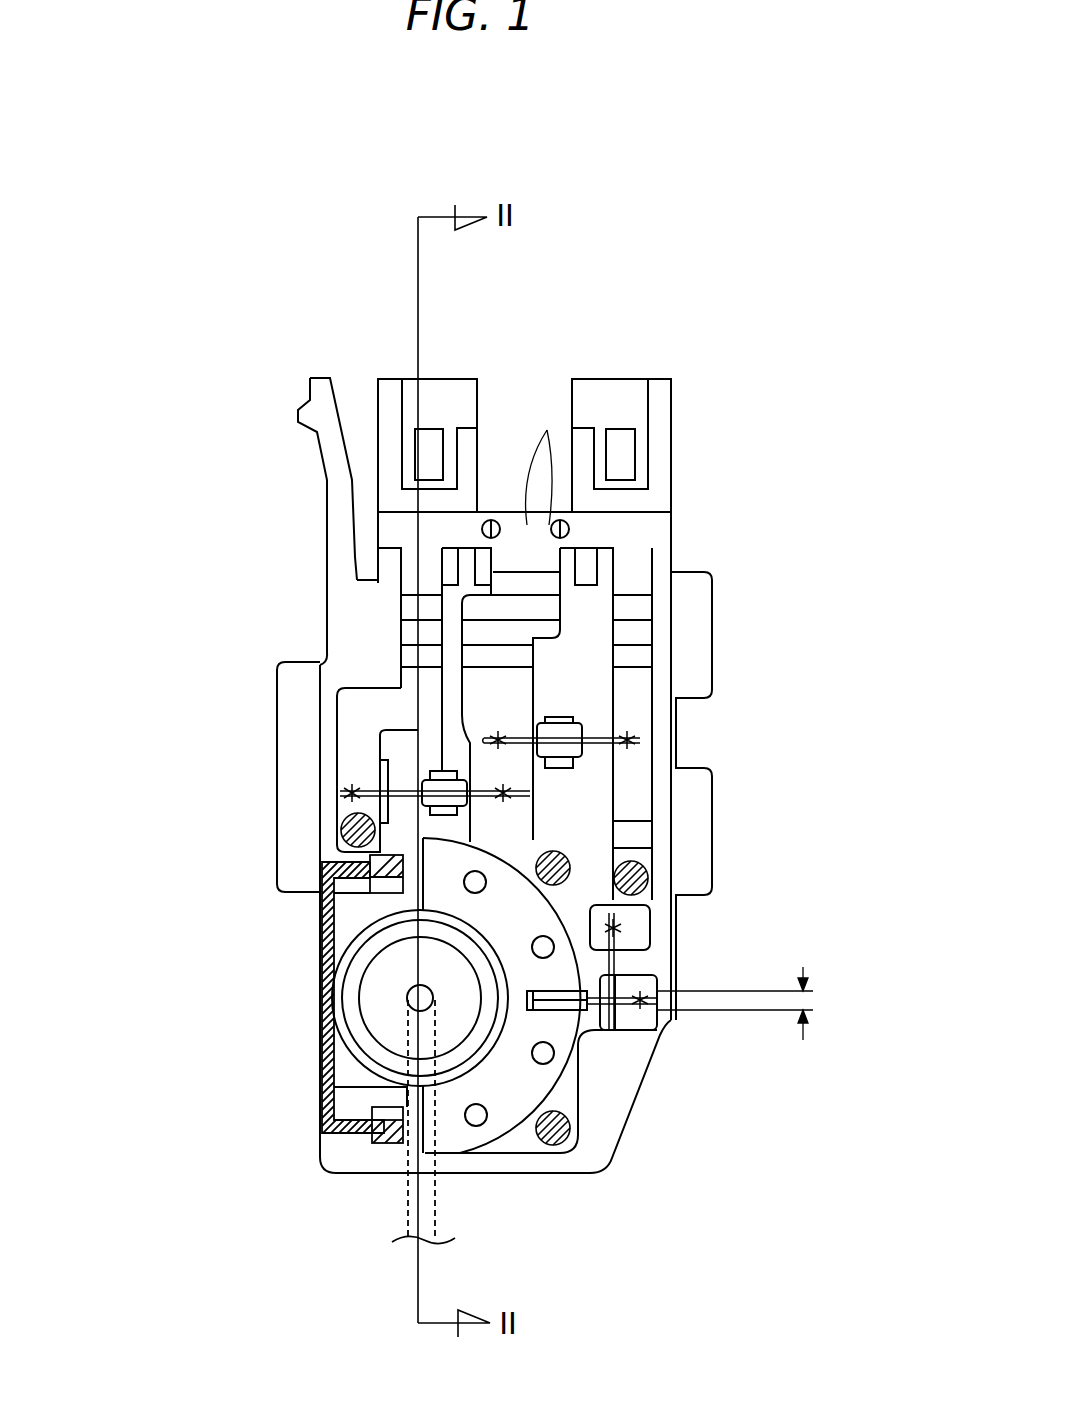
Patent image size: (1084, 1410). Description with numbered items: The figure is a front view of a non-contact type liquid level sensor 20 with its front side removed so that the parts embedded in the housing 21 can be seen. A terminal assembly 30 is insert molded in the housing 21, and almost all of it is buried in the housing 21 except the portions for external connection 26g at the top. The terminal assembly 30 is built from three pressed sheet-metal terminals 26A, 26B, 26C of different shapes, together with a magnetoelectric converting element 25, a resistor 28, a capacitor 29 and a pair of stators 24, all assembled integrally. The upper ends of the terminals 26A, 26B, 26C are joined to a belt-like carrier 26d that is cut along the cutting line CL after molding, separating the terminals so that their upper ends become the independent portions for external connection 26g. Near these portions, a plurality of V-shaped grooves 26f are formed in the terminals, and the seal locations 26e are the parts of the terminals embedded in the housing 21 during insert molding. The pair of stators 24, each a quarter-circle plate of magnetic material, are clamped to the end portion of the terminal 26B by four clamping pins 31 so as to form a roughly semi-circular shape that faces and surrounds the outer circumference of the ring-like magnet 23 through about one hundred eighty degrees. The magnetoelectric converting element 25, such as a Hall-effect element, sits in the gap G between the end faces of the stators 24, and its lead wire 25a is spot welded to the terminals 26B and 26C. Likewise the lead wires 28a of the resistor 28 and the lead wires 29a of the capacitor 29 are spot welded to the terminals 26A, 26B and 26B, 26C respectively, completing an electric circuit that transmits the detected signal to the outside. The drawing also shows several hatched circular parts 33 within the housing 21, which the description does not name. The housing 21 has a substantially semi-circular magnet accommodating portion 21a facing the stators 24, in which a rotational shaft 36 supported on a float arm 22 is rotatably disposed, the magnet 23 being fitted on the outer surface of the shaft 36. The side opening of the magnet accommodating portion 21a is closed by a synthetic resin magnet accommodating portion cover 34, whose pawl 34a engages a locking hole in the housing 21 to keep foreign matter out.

The non-contact type liquid level sensor 20 is at (733, 250).
The housing 21 is at (673, 432).
The magnet accommodating portion 21a is at (368, 1090).
The float arm 22 is at (408, 1205).
The magnet 23 is at (350, 962).
The stators 24 is at (578, 1116).
The magnetoelectric converting element 25 is at (562, 1020).
The lead wire 25a is at (647, 968).
The terminal 26A is at (398, 600).
The terminal 26B is at (582, 608).
The terminal 26C is at (700, 660).
The belt-like carrier 26d is at (441, 480).
The seal locations 26e is at (405, 527).
The V-shaped grooves 26f is at (497, 641).
The portions for external connection 26g is at (430, 612).
The resistor 28 is at (442, 770).
The lead wires 28a is at (383, 780).
The capacitor 29 is at (562, 722).
The lead wires 29a is at (620, 762).
The terminal assembly 30 is at (513, 505).
The clamping pins 31 is at (484, 1123).
The pin 33 is at (345, 815).
The magnet accommodating portion cover 34 is at (322, 1030).
The pawl 34a is at (372, 862).
The rotational shaft 36 is at (372, 975).
The cutting line CL is at (545, 461).
The gap G is at (747, 1003).